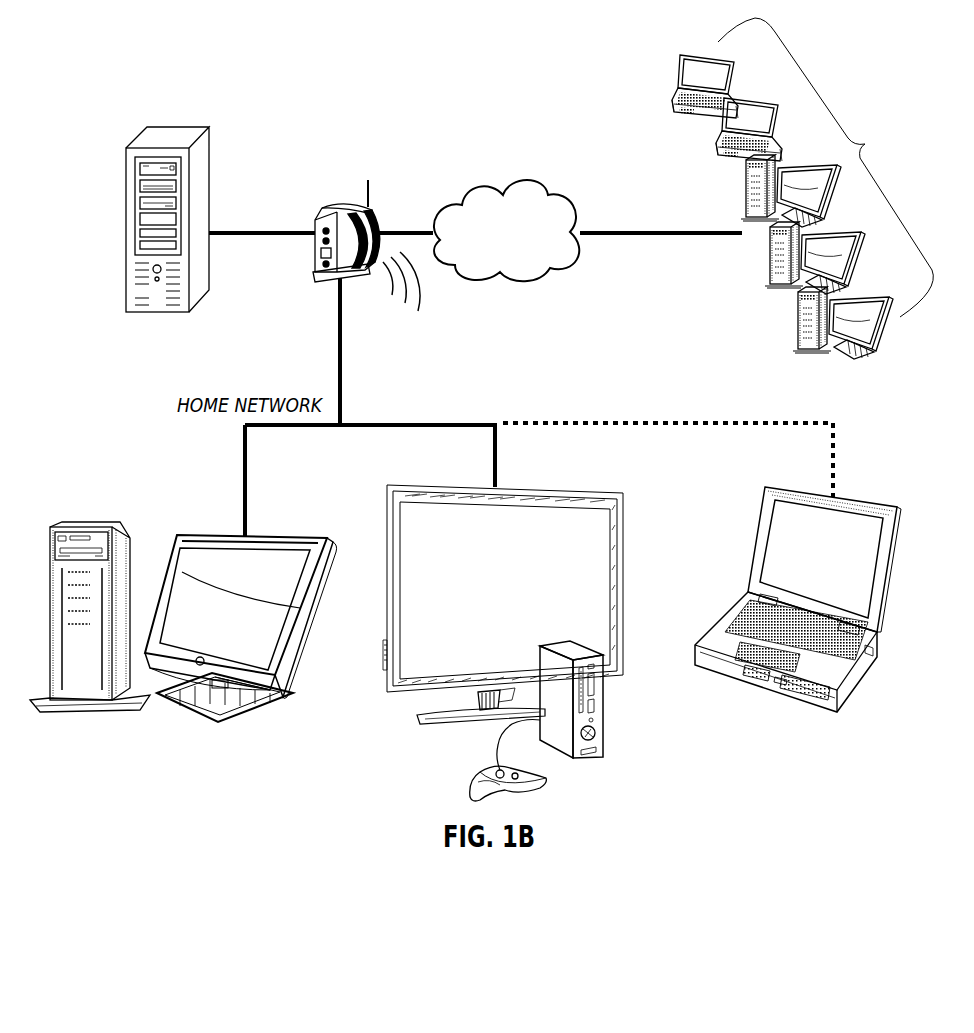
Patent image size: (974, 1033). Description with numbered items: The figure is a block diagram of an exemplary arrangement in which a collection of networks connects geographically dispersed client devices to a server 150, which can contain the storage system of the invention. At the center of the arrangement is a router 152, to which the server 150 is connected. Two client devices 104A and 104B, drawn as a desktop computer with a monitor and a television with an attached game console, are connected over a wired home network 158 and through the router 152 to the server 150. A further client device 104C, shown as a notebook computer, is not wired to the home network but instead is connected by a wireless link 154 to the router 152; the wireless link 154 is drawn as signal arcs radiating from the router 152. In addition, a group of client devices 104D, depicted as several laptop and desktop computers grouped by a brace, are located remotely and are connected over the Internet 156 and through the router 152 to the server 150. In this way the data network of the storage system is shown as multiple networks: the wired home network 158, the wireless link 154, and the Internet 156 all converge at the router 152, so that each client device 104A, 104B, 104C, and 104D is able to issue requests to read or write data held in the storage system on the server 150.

The server 150 is at (168, 136).
The router 152 is at (342, 200).
The wireless link 154 is at (418, 303).
The Internet 156 is at (507, 193).
The wired home network 158 is at (472, 421).
The client device 104A is at (275, 708).
The client device 104B is at (613, 682).
The client device 104C is at (853, 683).
The client devices 104D is at (802, 188).